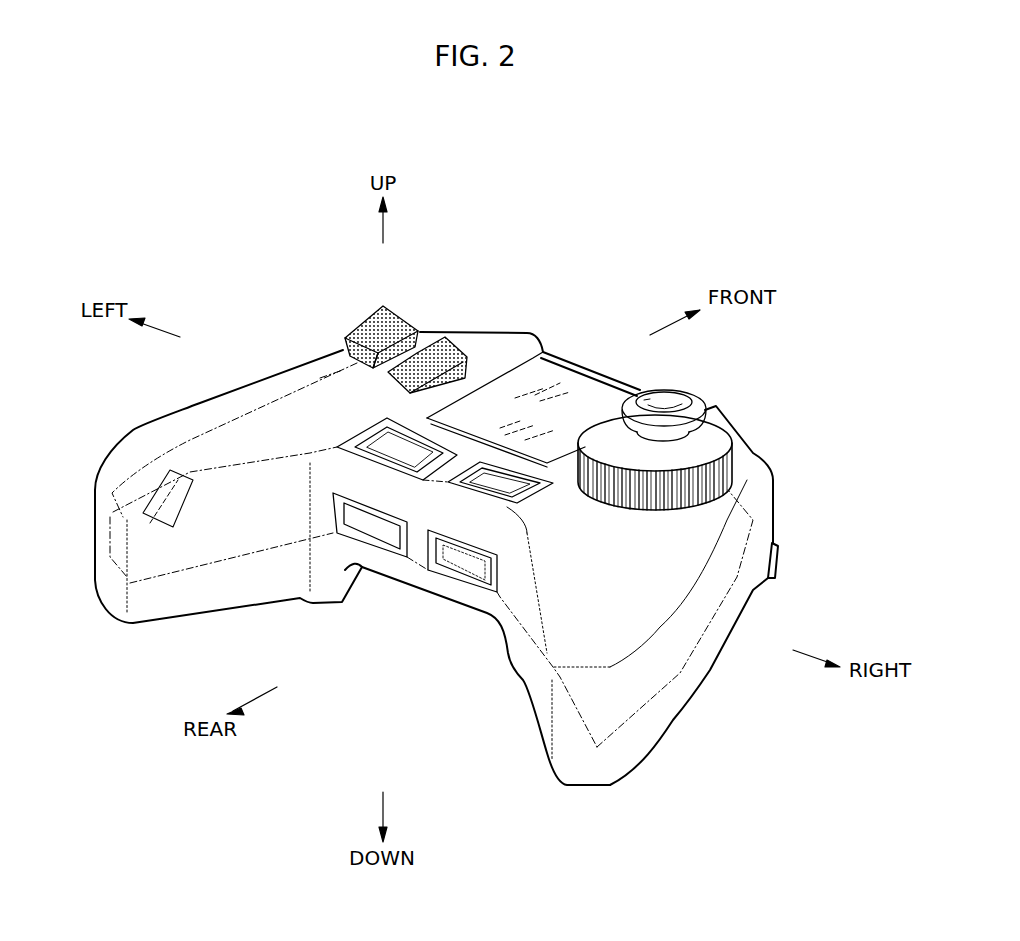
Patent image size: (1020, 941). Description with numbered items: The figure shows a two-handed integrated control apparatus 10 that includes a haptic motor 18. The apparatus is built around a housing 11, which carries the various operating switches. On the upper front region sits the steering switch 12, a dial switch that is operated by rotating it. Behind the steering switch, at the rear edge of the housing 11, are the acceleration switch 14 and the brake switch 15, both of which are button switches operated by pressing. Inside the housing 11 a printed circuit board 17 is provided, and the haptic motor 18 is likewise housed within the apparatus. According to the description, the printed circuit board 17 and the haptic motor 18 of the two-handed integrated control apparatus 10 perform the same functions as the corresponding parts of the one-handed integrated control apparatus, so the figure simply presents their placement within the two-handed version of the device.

The two-handed integrated control apparatus 10 is at (528, 307).
The housing 11 is at (672, 663).
The steering switch 12 is at (708, 435).
The acceleration switch 14 is at (438, 347).
The brake switch 15 is at (363, 320).
The printed circuit board (PCB) 17 is at (267, 403).
The haptic motor 18 is at (163, 477).